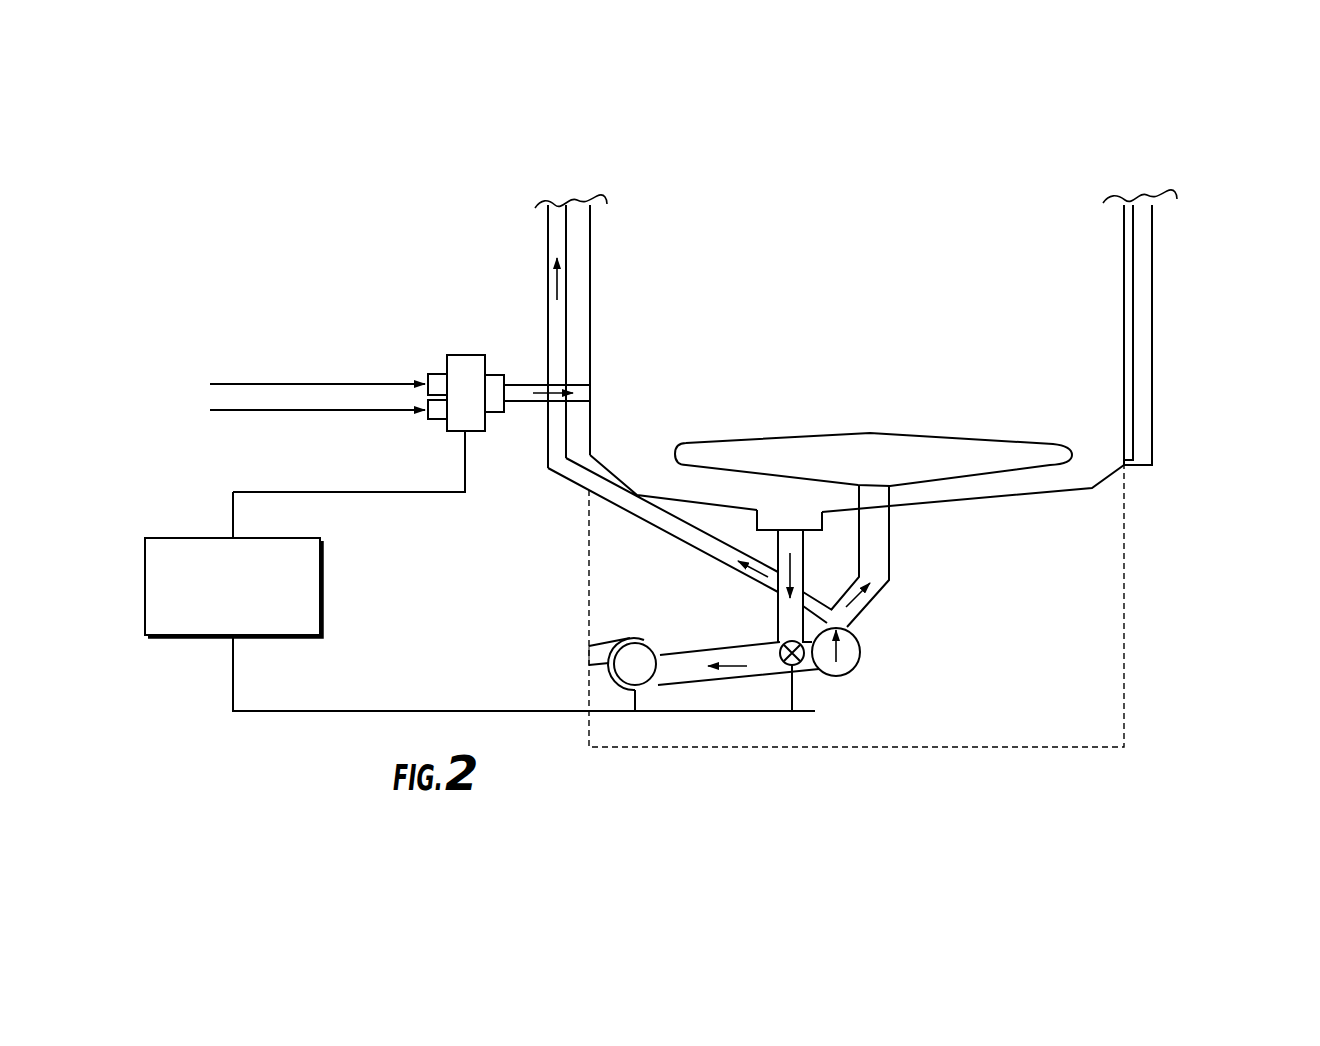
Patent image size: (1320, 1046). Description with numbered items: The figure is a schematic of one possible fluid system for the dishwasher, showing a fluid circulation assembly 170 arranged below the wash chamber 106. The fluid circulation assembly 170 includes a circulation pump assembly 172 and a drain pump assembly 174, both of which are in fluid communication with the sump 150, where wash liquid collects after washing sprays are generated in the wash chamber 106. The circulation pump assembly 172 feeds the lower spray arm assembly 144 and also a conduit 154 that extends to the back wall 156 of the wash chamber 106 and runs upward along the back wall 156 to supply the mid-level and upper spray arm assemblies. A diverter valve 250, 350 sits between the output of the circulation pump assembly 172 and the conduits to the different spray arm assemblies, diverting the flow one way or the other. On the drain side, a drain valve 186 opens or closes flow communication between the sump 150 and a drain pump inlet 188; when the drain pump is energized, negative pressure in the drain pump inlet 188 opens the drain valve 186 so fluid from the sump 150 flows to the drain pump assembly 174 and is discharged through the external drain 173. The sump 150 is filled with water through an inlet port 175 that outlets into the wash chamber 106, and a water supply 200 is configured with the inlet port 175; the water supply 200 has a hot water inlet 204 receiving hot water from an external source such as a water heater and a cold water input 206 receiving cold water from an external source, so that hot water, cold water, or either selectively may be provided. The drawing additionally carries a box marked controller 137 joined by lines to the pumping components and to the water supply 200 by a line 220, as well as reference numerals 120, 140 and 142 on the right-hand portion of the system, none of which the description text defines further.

The wash chamber 106 is at (1022, 188).
The exhaust pipe 120 is at (1152, 305).
The controller 137 is at (217, 553).
The reductant delivery system 140 is at (1124, 620).
The reductant tank bottom / outlet line 142 is at (990, 497).
The lower spray arm assembly 144 is at (930, 445).
The sump 150 is at (796, 516).
The conduit 154 is at (588, 492).
The back wall 156 is at (590, 225).
The fluid circulation assembly 170 is at (950, 650).
The circulation pump assembly 172 is at (862, 652).
The external drain 173 is at (582, 657).
The drain pump assembly 174 is at (635, 667).
The inlet port 175 is at (598, 393).
The drain valve 186 is at (795, 680).
The drain pump inlet 188 is at (727, 680).
The water supply 200 is at (418, 348).
The hot water inlet 204 is at (243, 382).
The cold water input 206 is at (240, 412).
The control wire 220 is at (330, 494).
The diverter valve 250 is at (848, 623).
The diverter valve 350 is at (987, 609).